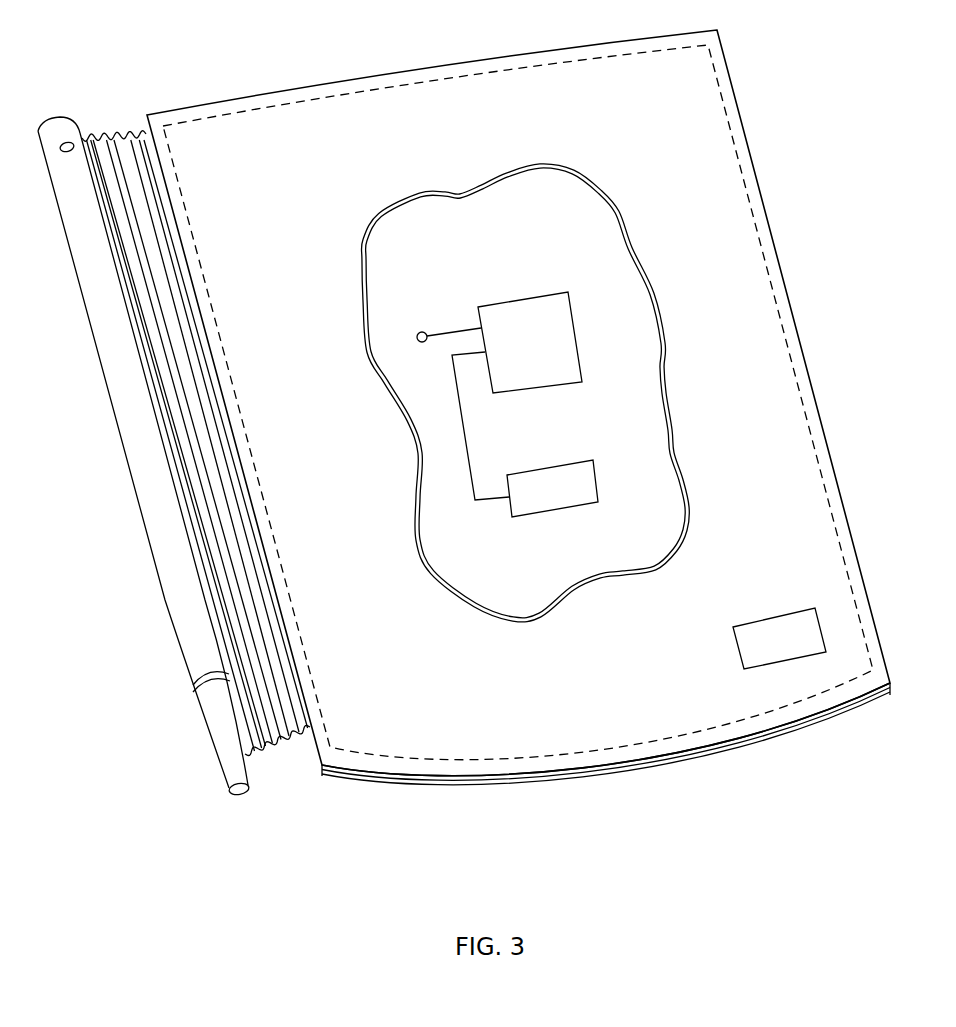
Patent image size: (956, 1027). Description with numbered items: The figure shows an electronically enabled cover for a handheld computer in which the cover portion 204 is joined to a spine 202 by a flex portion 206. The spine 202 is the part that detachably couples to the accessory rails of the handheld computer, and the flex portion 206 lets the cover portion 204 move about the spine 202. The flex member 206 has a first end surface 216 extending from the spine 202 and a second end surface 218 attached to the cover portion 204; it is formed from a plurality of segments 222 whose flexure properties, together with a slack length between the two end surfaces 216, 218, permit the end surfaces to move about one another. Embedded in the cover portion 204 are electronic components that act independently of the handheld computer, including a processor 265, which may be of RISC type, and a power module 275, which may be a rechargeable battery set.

The spine 202 is at (147, 375).
The cover portion 204 is at (397, 118).
The flex portion 206 is at (270, 680).
The first end surface 216 is at (205, 363).
The second end surface 218 is at (240, 697).
The segments 222 is at (104, 143).
The processor 265 is at (556, 360).
The power module 275 is at (588, 492).